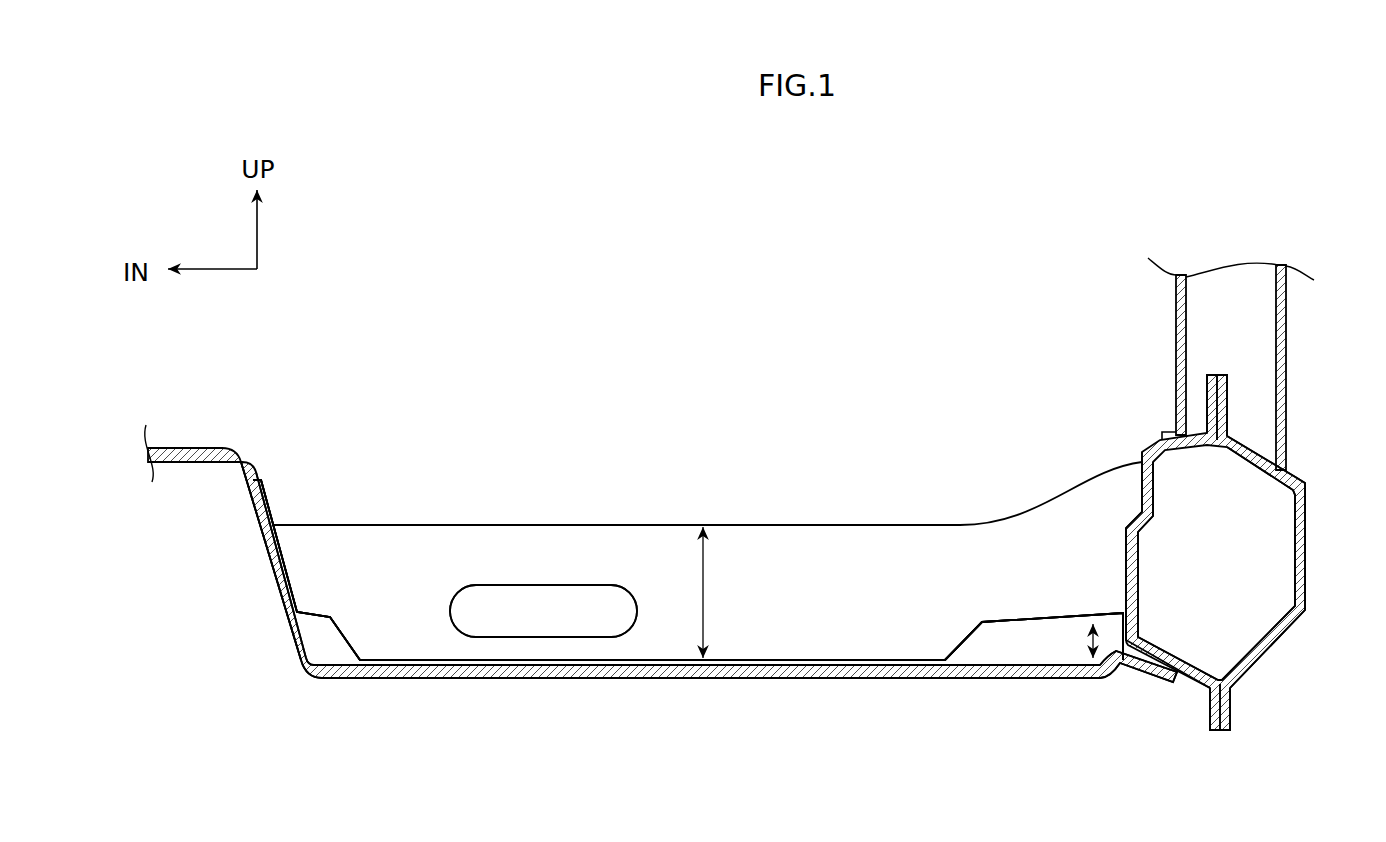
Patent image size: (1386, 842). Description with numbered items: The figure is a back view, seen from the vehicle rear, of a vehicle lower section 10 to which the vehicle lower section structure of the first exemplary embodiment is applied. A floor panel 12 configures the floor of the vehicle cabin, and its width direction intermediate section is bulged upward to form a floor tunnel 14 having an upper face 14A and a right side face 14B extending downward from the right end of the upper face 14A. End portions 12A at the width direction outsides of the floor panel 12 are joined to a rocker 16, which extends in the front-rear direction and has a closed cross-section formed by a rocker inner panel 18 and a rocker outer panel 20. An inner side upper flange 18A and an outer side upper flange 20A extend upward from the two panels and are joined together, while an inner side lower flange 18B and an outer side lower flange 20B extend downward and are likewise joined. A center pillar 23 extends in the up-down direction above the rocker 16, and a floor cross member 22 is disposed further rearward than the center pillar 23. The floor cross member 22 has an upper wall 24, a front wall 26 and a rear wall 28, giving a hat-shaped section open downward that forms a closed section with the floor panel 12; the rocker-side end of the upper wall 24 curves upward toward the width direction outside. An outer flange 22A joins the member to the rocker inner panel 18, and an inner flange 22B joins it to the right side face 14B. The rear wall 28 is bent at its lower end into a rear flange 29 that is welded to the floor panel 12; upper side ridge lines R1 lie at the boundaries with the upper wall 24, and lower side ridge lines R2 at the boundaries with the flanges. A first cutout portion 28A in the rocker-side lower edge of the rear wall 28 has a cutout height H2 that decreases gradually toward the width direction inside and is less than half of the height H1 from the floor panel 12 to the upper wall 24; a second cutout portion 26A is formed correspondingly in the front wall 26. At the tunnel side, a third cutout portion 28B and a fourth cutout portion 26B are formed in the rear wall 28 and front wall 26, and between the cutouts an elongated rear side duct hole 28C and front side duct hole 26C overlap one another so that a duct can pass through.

The vehicle lower section 10 is at (743, 280).
The floor panel 12 is at (741, 679).
The end portions 12A is at (1160, 685).
The floor tunnel 14 is at (208, 447).
The upper face 14A is at (185, 448).
The right side face 14B is at (297, 641).
The rocker 16 is at (1299, 652).
The rocker inner panel 18 is at (1140, 492).
The inner side upper flange 18A is at (1207, 402).
The inner side lower flange 18B is at (1207, 710).
The rocker outer panel 20 is at (1259, 664).
The outer side upper flange 20A is at (1228, 400).
The outer side lower flange 20B is at (1232, 710).
The floor cross member 22 is at (657, 500).
The outer flange 22A is at (1136, 458).
The inner flange 22B is at (262, 500).
The center pillar 23 is at (1176, 318).
The upper wall 24 is at (794, 525).
The front wall 26 is at (1052, 652).
The second cutout portion 26A is at (1082, 616).
The fourth cutout portion 26B is at (306, 570).
The front side duct hole 26C is at (543, 611).
The rear wall 28 is at (838, 545).
The first cutout portion 28A is at (1002, 620).
The third cutout portion 28B is at (323, 617).
The rear side duct hole 28C is at (528, 637).
The rear flange 29 is at (835, 660).
The height of the floor cross member H1 is at (706, 593).
The cutout height H2 is at (1096, 662).
The upper side ridge lines R1 is at (541, 525).
The lower side ridge lines R2 is at (651, 660).